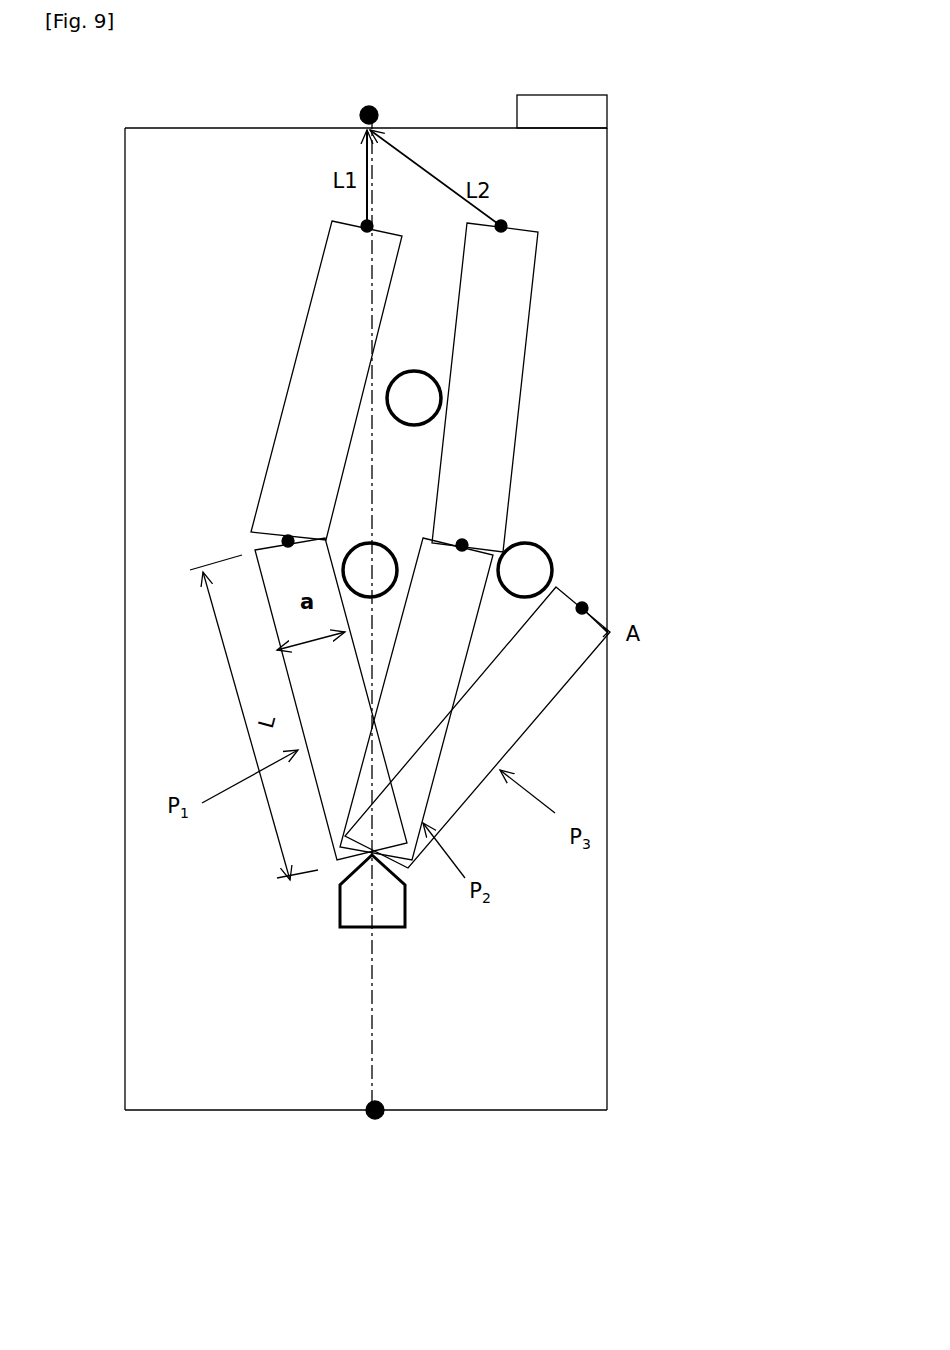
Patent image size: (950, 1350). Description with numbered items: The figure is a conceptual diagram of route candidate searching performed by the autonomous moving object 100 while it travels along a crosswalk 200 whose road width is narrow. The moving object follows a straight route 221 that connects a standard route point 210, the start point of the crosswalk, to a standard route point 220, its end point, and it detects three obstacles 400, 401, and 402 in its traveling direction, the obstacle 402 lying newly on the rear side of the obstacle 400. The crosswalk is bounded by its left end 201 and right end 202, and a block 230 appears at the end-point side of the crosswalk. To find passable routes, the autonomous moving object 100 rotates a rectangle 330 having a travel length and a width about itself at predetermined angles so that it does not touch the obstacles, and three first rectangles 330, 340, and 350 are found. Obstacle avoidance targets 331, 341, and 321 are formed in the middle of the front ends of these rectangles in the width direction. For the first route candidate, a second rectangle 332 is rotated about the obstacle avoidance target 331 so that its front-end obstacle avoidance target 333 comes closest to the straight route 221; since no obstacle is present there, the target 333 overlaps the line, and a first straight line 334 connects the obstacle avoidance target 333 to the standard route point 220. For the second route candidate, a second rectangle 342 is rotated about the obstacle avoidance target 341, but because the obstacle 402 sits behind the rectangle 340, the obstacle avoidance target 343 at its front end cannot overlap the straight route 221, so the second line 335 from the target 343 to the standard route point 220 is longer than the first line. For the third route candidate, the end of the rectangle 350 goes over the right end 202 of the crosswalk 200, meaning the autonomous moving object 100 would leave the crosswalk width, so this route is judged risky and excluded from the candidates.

The autonomous moving object 100 is at (345, 924).
The crosswalk 200 is at (360, 593).
The left side wall of base frame 201 is at (94, 619).
The right end of the crosswalk 202 is at (646, 619).
The standard route point 210 is at (362, 1138).
The standard route point 220 is at (384, 94).
The straight route 221 is at (328, 612).
The mounting block 230 is at (562, 90).
The obstacle avoidance target 321 is at (621, 575).
The rectangle at a travel distance 330 is at (278, 699).
The obstacle avoidance target 331 is at (220, 511).
The rectangle at the travelable distance 332 is at (302, 380).
The obstacle avoidance target 333 is at (321, 208).
The first reference line L1 334 is at (329, 178).
The second reference line L2 335 is at (435, 178).
The rectangle at the travelable distance 340 is at (427, 699).
The obstacle avoidance target 341 is at (430, 513).
The rectangle at a travelable distance 342 is at (509, 387).
The obstacle avoidance target 343 is at (540, 213).
The rectangle at a passable distance 350 is at (477, 727).
The obstacle 400 is at (370, 536).
The obstacle 401 is at (554, 546).
The obstacle 402 is at (414, 373).